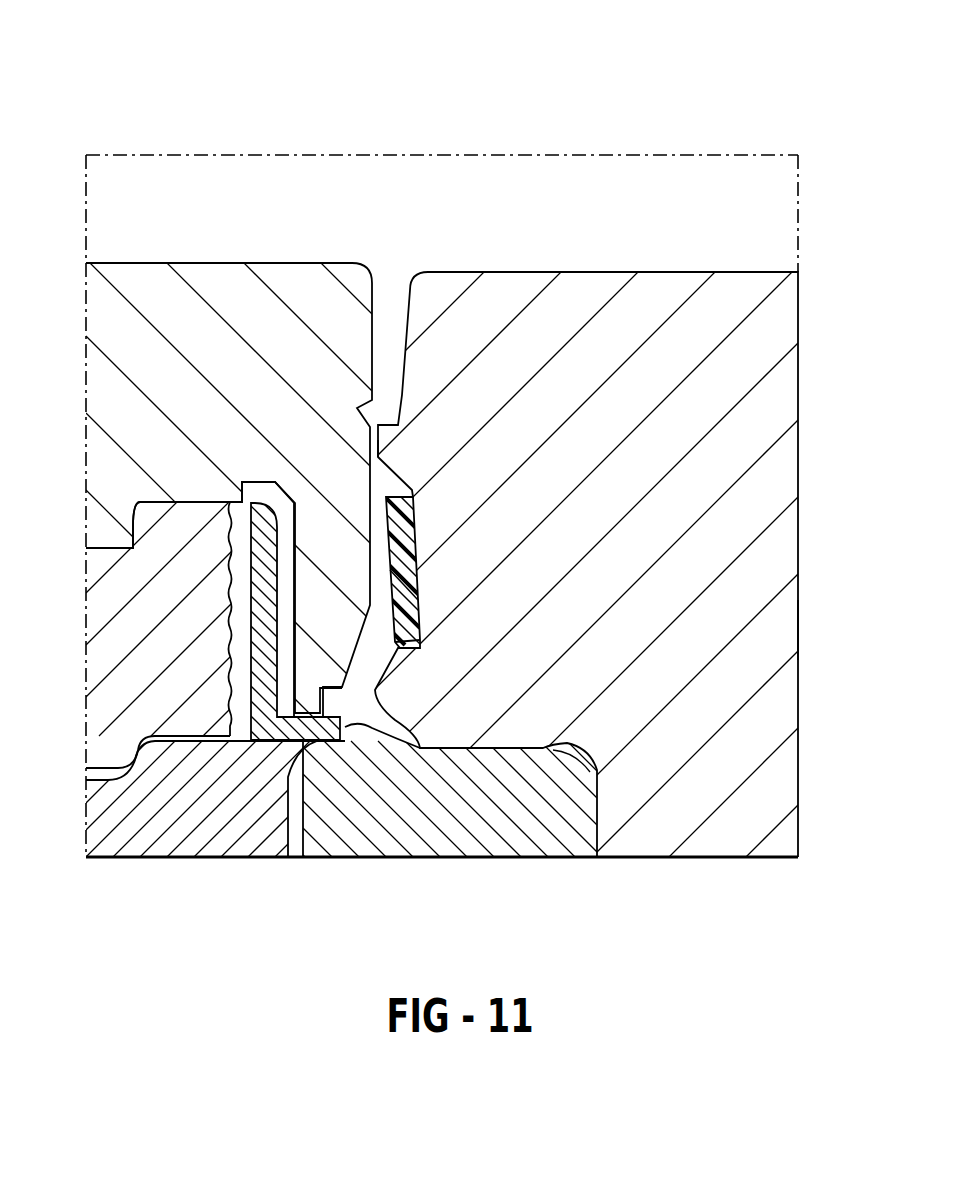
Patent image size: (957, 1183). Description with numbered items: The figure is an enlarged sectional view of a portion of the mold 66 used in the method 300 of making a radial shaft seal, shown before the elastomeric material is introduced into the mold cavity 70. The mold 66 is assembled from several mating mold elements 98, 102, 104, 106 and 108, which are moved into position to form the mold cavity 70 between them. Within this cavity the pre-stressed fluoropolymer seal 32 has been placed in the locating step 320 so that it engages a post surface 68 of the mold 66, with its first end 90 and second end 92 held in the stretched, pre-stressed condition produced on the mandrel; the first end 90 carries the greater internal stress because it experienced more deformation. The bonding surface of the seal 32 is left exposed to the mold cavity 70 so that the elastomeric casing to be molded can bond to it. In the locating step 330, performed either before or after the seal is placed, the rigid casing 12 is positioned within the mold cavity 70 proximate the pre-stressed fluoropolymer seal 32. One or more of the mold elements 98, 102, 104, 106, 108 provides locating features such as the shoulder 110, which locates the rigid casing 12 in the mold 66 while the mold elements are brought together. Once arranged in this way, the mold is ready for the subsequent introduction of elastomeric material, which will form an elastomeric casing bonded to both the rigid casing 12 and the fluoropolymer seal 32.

The method 300 is at (535, 33).
The mold element 108 is at (225, 290).
The mold element 98 is at (738, 297).
The mold element 106 is at (104, 583).
The mold element 104 is at (196, 815).
The mold element 102 is at (488, 833).
The rigid casing 12 is at (267, 518).
The mold cavity 70 is at (245, 512).
The pre-stressed fluoropolymer seal 32 is at (414, 547).
The first end 90 is at (404, 503).
The post surface 68 is at (413, 578).
The second end 92 is at (416, 642).
The locating step 320 is at (440, 512).
The locating step 330 is at (250, 683).
The mold 66 is at (798, 632).
The shoulder 110 is at (369, 736).